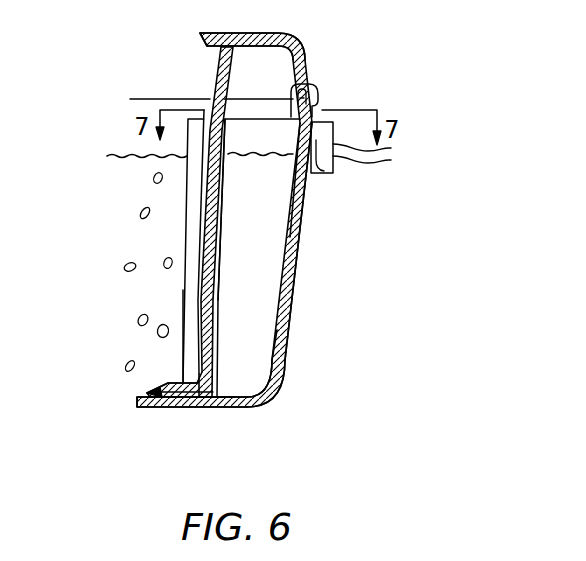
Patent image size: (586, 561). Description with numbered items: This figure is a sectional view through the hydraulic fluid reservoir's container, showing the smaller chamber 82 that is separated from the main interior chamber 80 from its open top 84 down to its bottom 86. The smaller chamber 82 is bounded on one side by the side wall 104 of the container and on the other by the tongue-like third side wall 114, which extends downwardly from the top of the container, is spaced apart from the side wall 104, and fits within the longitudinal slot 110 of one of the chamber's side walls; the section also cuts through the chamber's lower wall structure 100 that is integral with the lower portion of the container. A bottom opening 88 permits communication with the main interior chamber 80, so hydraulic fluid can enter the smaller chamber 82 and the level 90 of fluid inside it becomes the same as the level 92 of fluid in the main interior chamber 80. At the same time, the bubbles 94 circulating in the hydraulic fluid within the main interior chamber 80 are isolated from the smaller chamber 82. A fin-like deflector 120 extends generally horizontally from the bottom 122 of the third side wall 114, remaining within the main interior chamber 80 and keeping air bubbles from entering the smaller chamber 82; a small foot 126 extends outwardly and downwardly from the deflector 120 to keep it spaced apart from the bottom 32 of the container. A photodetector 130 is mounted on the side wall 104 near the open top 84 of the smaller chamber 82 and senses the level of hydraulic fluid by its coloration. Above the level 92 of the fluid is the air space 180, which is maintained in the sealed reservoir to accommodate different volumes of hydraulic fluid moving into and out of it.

The bottom 32 is at (268, 396).
The main interior chamber 80 is at (146, 303).
The smaller chamber 82 is at (253, 283).
The open top 84 is at (257, 119).
The bottom 86 is at (254, 408).
The bottom opening 88 is at (173, 401).
The level 90 is at (257, 155).
The level 92 is at (135, 156).
The bubbles 94 is at (124, 268).
The float 100 is at (188, 290).
The side wall 104 is at (284, 318).
The longitudinal slot 110 is at (282, 359).
The third side wall 114 is at (230, 237).
The fin-like deflector 120 is at (165, 381).
The bottom 122 is at (213, 403).
The small foot 126 is at (158, 399).
The photodetector 130 is at (320, 173).
The air space 180 is at (210, 63).